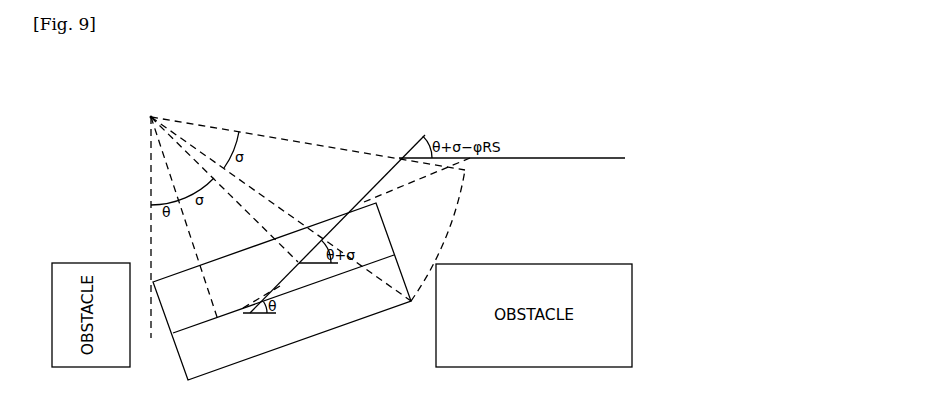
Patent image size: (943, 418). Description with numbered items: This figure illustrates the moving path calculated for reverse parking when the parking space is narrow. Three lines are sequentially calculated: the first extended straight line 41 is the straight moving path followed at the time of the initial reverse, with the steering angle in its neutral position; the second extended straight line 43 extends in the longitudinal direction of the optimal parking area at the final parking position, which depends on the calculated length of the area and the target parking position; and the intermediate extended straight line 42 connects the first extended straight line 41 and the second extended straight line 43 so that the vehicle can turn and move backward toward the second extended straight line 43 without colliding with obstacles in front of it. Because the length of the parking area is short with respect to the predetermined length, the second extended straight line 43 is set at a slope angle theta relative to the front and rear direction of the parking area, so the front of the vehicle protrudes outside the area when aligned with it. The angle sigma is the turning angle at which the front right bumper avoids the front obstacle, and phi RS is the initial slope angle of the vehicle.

The first extended straight line 41 is at (563, 157).
The intermediate extended straight line 42 is at (355, 208).
The second extended straight line 43 is at (214, 317).